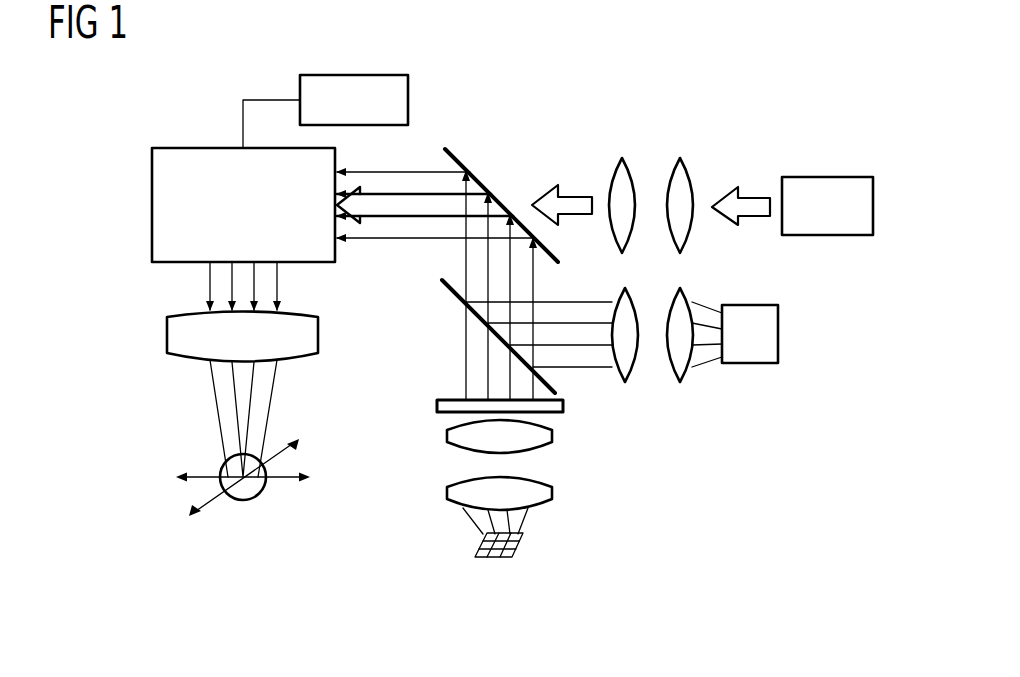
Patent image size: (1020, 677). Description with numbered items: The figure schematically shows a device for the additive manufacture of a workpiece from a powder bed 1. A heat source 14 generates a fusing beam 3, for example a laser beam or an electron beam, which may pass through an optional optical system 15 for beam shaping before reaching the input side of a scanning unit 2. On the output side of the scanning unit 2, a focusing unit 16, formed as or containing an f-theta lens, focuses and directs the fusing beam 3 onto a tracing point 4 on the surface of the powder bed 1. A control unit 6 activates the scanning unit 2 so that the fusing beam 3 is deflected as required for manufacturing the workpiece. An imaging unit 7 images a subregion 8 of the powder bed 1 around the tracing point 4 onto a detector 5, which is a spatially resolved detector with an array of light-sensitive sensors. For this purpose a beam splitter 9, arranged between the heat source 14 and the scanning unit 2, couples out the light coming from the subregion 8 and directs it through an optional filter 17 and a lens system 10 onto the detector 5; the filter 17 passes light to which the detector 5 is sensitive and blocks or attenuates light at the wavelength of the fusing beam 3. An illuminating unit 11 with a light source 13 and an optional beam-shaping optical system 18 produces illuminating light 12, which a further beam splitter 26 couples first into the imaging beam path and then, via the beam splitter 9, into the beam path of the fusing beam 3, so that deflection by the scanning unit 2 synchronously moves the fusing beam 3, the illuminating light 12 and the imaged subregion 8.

The powder bed 1 is at (289, 541).
The scanning unit 2 is at (152, 205).
The fusing beam 3 is at (393, 194).
The tracing point 4 is at (243, 478).
The detector 5 is at (477, 546).
The control unit 6 is at (408, 98).
The imaging unit 7 is at (448, 248).
The subregion 8 is at (264, 490).
The beam splitter 9 is at (482, 185).
The lens system 10 is at (441, 420).
The illuminating unit 11 is at (797, 432).
The illuminating light 12 is at (423, 172).
The light source 13 is at (750, 363).
The heat source 14 is at (836, 177).
The optical system 15 is at (608, 158).
The focusing unit 16 is at (167, 335).
The filter 17 is at (437, 406).
The beam-shaping optical system 18 is at (697, 384).
The further beam splitter 26 is at (445, 292).